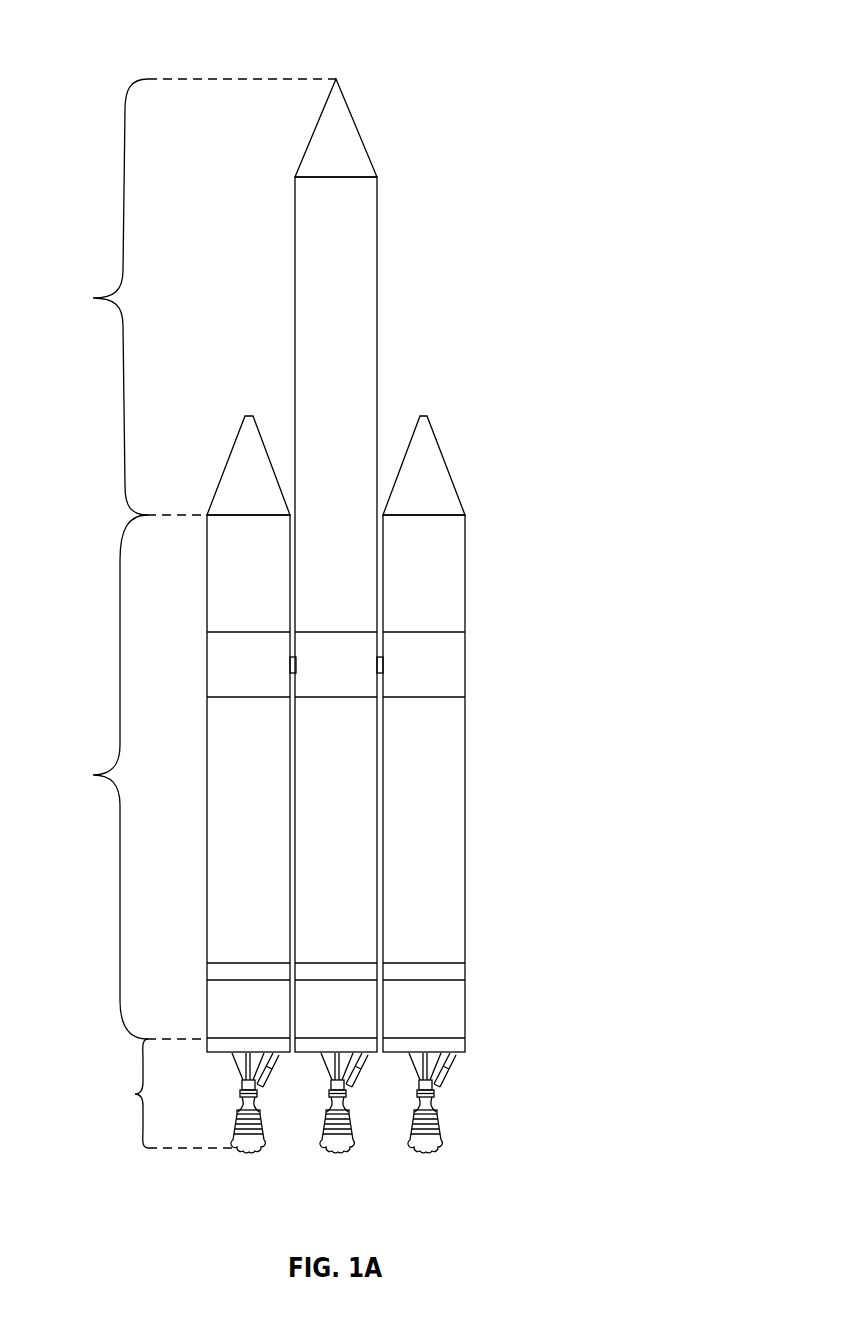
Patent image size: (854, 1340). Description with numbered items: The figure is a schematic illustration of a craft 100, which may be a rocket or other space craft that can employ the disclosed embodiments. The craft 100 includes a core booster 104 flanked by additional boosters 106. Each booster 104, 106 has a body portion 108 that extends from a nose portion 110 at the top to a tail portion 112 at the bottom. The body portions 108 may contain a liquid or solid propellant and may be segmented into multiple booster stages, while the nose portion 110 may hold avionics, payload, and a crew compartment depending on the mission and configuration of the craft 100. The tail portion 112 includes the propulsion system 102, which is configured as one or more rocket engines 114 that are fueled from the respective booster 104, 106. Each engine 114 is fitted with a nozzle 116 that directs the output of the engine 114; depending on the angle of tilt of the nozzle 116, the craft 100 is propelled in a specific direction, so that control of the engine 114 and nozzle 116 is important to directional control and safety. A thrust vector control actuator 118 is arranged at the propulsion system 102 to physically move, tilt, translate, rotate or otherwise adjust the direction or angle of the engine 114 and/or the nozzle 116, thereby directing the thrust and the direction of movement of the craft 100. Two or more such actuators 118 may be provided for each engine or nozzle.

The craft 100 is at (450, 26).
The propulsion system 102 is at (472, 1109).
The core booster 104 is at (360, 250).
The additional boosters 106 is at (220, 608).
The body portion 108 is at (123, 777).
The nose portion 110 is at (195, 297).
The tail portion 112 is at (165, 1093).
The engine 114 is at (330, 1110).
The nozzle 116 is at (407, 1122).
The thrust vector control actuator 118 is at (455, 1060).